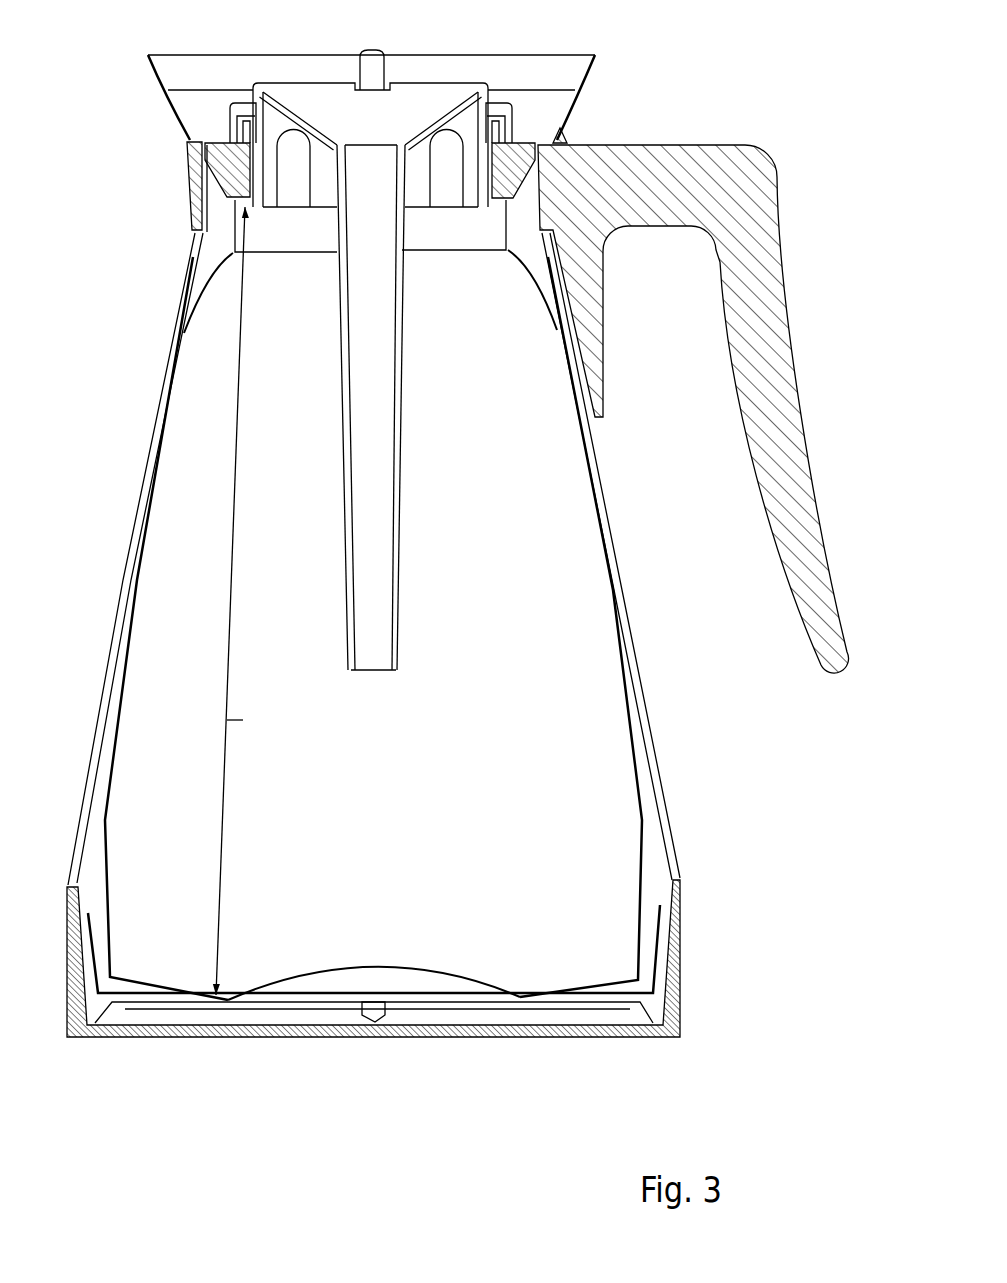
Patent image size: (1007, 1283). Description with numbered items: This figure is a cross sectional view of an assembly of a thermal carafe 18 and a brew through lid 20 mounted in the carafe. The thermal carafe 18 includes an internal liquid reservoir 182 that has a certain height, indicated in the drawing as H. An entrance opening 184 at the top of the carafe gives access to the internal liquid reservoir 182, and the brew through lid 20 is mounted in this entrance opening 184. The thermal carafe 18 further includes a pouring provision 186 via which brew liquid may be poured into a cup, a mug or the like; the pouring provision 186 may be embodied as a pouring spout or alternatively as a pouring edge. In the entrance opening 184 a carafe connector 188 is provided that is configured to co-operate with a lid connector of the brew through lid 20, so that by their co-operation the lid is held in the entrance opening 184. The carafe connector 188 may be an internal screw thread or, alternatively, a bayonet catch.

The thermal carafe 18 is at (685, 140).
The brew through lid 20 is at (435, 78).
The internal liquid reservoir 182 is at (493, 818).
The entrance opening 184 is at (487, 202).
The pouring provision 186 is at (148, 57).
The carafe connector 188 is at (255, 195).